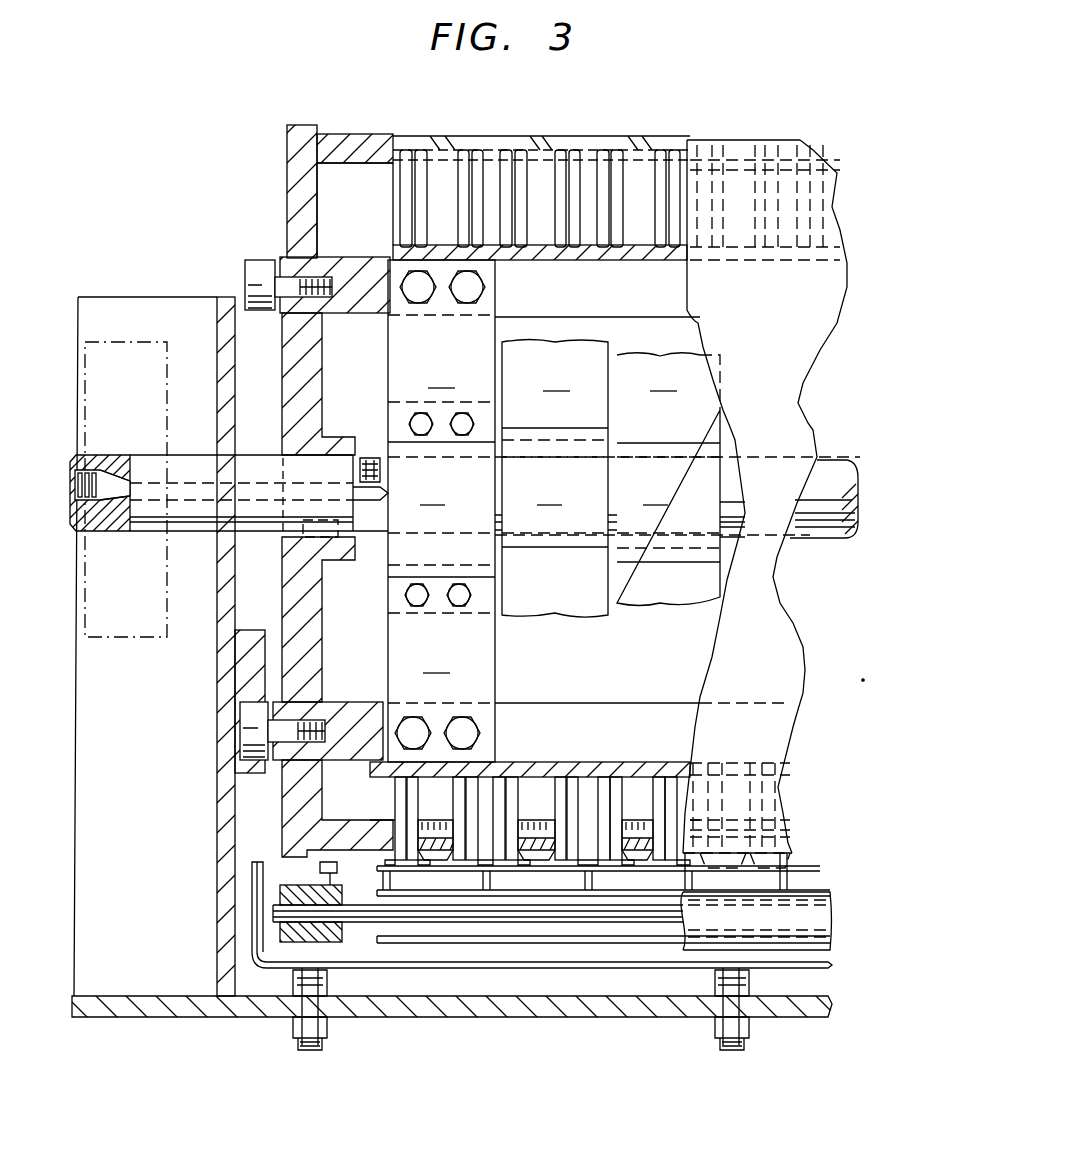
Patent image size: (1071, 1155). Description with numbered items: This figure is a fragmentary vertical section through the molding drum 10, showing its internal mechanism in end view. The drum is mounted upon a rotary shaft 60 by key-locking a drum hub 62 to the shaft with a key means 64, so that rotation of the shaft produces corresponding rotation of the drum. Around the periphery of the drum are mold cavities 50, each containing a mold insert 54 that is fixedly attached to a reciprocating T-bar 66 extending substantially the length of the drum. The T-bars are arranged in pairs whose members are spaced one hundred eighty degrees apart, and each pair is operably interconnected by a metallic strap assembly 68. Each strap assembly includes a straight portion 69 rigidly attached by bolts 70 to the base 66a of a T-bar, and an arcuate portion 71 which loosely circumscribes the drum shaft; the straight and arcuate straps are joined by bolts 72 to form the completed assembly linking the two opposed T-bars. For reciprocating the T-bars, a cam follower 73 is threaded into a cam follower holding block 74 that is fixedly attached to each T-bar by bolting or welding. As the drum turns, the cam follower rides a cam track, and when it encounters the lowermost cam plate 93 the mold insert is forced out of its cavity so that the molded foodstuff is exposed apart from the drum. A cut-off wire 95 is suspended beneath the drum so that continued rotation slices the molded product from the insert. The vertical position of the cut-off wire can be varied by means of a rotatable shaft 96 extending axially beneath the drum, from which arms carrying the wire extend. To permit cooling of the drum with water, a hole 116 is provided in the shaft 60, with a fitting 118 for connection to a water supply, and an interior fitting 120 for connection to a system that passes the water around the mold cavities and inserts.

The molding drum 10 is at (278, 200).
The mold cavity 50 is at (480, 136).
The mold insert 54 is at (464, 201).
The rotary shaft 60 is at (189, 466).
The drum hub 62 is at (295, 355).
The key means 64 is at (310, 538).
The T-bar 66 is at (598, 255).
The base of T-bar 66a is at (548, 304).
The strap assembly 68 is at (377, 360).
The straight portion 69 is at (550, 518).
The bolts 70 is at (478, 290).
The arcuate portion 71 is at (544, 493).
The bolts 72 is at (407, 421).
The cam follower 73 is at (258, 262).
The cam follower holding block 74 is at (352, 262).
The lowermost cam plate 93 is at (240, 663).
The cut-off wire 95 is at (533, 866).
The rotatable shaft 96 is at (595, 918).
The hole 116 is at (105, 472).
The fitting 118 is at (72, 485).
The interior fitting 120 is at (358, 466).